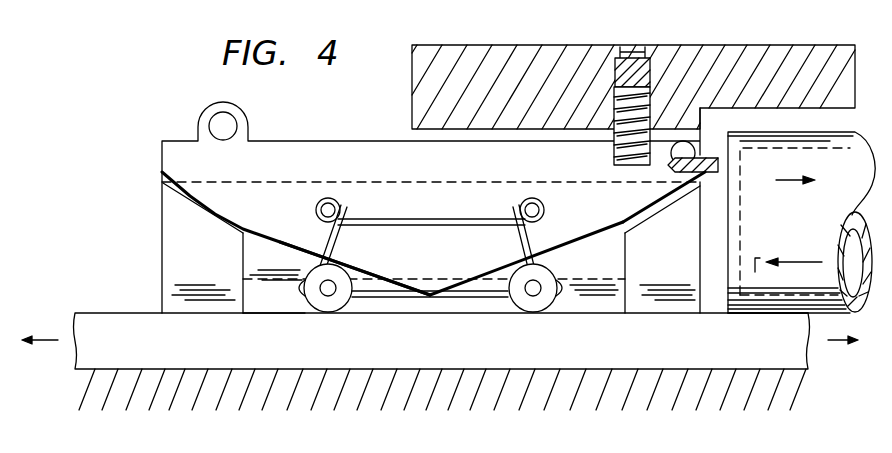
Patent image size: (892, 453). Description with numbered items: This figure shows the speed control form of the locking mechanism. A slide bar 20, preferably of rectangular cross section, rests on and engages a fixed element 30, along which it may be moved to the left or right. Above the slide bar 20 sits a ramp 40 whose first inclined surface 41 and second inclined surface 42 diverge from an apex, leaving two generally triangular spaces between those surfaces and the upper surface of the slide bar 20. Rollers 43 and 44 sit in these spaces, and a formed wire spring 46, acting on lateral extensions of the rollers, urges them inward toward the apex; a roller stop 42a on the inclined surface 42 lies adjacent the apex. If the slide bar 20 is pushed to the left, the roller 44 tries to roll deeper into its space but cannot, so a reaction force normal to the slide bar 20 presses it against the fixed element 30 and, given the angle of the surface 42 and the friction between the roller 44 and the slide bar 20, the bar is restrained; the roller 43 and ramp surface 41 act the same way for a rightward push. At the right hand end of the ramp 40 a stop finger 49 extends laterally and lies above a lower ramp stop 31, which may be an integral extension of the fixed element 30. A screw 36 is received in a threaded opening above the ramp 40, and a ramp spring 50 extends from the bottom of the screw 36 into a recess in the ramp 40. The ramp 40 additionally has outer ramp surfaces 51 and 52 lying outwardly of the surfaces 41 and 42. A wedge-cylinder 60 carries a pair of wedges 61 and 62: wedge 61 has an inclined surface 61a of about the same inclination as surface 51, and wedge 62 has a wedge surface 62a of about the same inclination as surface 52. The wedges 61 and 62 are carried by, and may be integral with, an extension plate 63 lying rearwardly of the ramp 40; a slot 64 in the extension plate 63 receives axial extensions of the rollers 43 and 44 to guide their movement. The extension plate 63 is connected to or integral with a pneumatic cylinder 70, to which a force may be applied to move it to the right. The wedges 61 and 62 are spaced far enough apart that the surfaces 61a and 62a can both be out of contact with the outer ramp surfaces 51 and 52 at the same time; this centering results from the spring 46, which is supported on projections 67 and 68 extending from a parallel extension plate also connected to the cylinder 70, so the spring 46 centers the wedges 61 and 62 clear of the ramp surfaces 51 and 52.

The slide bar 20 is at (450, 363).
The fixed element 30 is at (413, 400).
The ramp 40 is at (330, 130).
The screw 36 is at (626, 56).
The ramp spring 50 is at (649, 120).
The stop finger 49 is at (688, 152).
The lower ramp stop 31 is at (707, 174).
The outer ramp surface 51 is at (210, 203).
The first inclined surface 41 is at (295, 248).
The second inclined surface 42 is at (580, 242).
The outer ramp surface 52 is at (656, 204).
The wedge 61 is at (204, 265).
The inclined surface 61a is at (217, 225).
The extension plate 63 is at (278, 297).
The wedge 62 is at (691, 272).
The wedge surface 62a is at (658, 208).
The roller stop 42a is at (480, 276).
The formed wire spring 46 is at (424, 220).
The slot 64 is at (381, 291).
The projection 67 is at (330, 210).
The projection 68 is at (534, 210).
The roller 43 is at (333, 312).
The roller 44 is at (533, 312).
The pneumatic cylinder 70 is at (795, 229).
The wedge-cylinder 60 is at (745, 320).